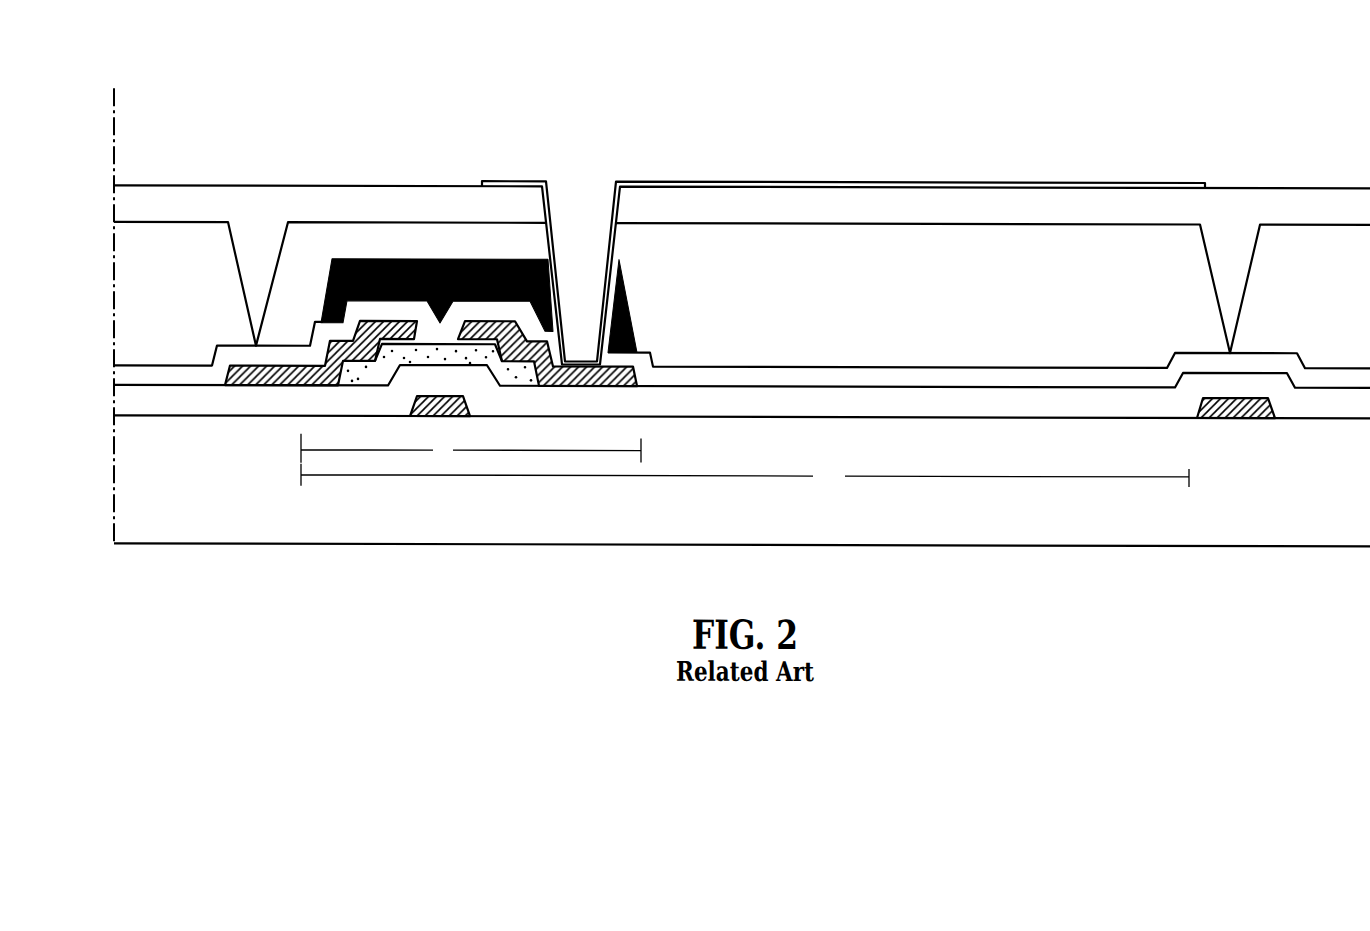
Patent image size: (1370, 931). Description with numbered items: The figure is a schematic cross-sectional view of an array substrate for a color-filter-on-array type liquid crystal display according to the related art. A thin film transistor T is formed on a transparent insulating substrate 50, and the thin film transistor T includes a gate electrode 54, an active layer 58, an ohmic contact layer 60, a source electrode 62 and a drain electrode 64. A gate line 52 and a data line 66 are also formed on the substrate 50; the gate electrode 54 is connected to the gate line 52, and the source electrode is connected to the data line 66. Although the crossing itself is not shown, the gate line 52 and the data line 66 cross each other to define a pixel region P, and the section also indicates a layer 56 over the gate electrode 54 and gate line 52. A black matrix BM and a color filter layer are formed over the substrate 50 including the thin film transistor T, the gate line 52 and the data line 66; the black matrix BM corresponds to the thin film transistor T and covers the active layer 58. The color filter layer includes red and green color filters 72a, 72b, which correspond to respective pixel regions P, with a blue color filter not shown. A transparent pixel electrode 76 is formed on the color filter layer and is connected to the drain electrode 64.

The transparent insulating substrate 50 is at (1336, 516).
The gate line 52 is at (1237, 418).
The gate electrode 54 is at (438, 418).
The gate insulating layer 56 is at (894, 412).
The active layer 58 is at (441, 343).
The ohmic contact layer 60 is at (342, 257).
The source electrode 62 is at (408, 257).
The drain electrode 64 is at (520, 257).
The data line 66 is at (258, 365).
The red color filter 72a is at (1068, 220).
The green color filter 72b is at (158, 243).
The transparent pixel electrode 76 is at (810, 181).
The black matrix BM is at (633, 326).
The thin film transistor T is at (471, 449).
The pixel region P is at (745, 477).